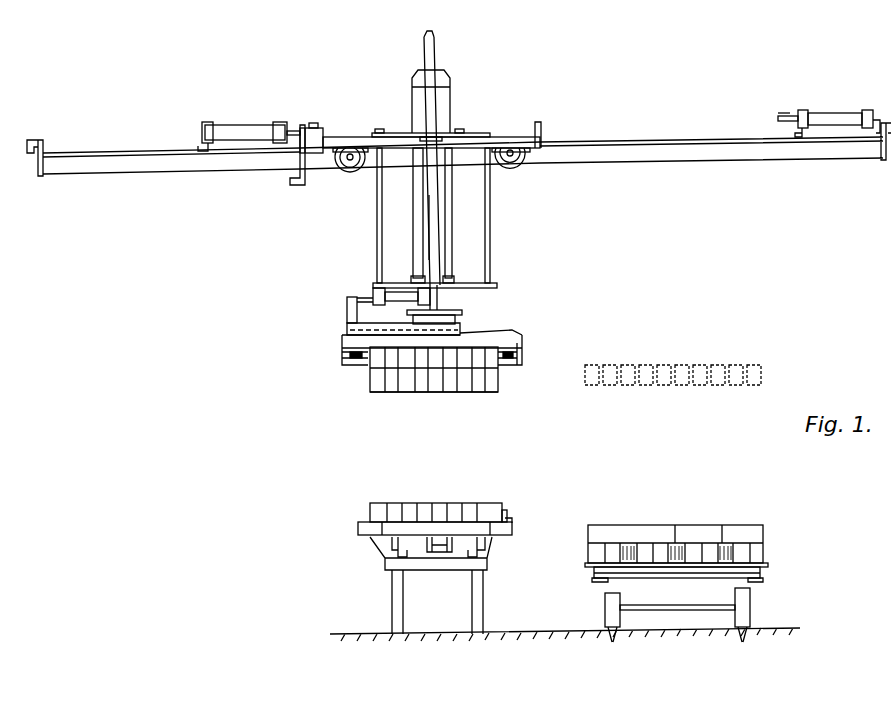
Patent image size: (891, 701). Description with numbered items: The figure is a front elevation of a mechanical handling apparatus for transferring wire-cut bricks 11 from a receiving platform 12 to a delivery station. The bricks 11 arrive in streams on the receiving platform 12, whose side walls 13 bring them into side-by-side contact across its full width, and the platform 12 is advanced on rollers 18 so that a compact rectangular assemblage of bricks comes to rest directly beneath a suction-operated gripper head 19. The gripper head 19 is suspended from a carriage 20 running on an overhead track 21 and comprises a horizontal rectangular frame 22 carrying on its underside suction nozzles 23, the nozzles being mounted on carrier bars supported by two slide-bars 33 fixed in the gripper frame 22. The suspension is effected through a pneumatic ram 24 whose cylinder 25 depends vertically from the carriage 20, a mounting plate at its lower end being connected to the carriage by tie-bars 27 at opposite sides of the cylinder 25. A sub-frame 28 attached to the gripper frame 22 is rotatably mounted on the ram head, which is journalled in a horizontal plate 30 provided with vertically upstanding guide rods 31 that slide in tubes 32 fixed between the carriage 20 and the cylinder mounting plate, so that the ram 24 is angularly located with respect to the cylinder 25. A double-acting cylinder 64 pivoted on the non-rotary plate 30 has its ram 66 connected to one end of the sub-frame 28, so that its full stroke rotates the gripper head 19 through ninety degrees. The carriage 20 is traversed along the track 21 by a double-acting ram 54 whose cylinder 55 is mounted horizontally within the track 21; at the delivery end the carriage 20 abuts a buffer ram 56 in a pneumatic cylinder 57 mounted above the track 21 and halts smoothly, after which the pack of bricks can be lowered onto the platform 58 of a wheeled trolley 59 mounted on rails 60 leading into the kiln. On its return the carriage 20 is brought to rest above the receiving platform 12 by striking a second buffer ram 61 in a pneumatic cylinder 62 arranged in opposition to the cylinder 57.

The wire-cut bricks 11 is at (468, 391).
The receiving platform 12 is at (490, 534).
The side walls 13 is at (506, 512).
The rollers 18 is at (390, 548).
The suction-operated gripper head 19 is at (352, 360).
The carriage 20 is at (512, 138).
The overhead track 21 is at (664, 158).
The horizontal rectangular frame 22 is at (523, 337).
The suction nozzles 23 is at (372, 368).
The pneumatic ram 24 is at (451, 103).
The cylinder 25 is at (447, 222).
The tie-bars 27 is at (377, 212).
The sub-frame 28 is at (498, 330).
The horizontal plate 30 is at (462, 316).
The guide rods 31 is at (436, 52).
The tubes 32 is at (428, 195).
The slide-bars 33 is at (506, 362).
The double-acting ram 54 is at (306, 165).
The cylinder 55 is at (233, 160).
The buffer ram 56 is at (787, 115).
The pneumatic cylinder 57 is at (822, 113).
The platform 58 is at (597, 580).
The wheeled trolley 59 is at (698, 576).
The rails 60 is at (621, 620).
The second buffer ram 61 is at (312, 125).
The pneumatic cylinder 62 is at (246, 124).
The double-acting cylinder 64 is at (393, 291).
The ram 66 is at (352, 297).